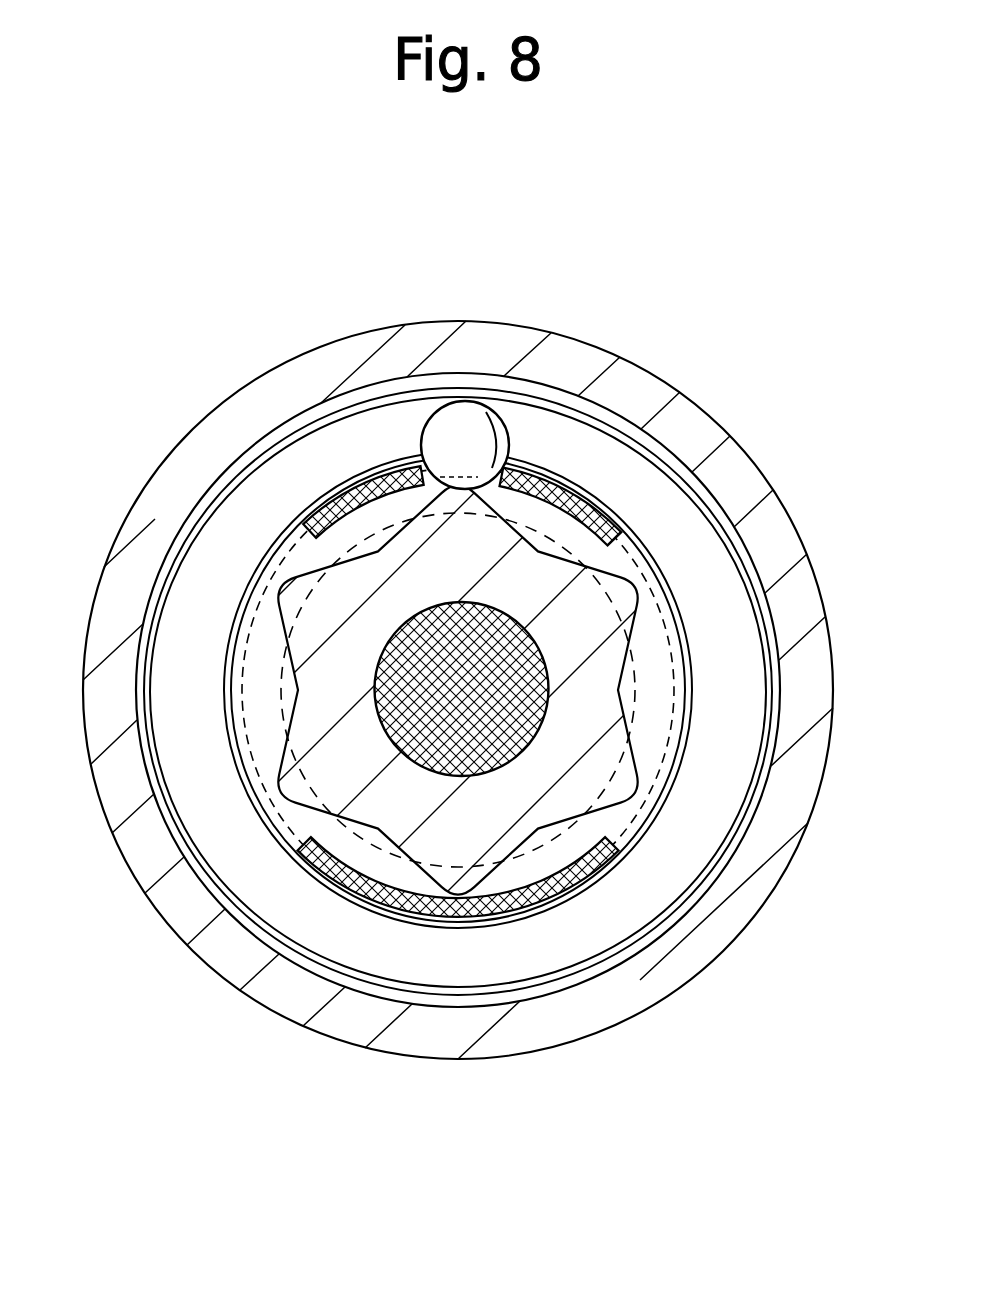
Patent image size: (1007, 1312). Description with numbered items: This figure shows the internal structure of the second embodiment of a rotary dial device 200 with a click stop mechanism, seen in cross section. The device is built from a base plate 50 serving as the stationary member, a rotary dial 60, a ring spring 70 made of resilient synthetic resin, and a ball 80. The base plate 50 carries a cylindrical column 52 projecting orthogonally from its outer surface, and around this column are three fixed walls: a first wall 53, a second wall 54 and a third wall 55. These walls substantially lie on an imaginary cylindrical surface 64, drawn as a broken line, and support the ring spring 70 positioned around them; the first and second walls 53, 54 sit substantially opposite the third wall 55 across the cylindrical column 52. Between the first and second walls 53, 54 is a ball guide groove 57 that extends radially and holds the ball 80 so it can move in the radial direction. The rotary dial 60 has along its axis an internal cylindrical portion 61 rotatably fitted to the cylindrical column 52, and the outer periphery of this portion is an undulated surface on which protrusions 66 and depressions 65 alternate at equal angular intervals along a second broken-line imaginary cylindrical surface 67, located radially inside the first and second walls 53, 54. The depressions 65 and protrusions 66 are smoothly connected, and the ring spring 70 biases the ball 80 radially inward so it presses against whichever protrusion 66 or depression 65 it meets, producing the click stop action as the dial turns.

The rotary dial device 200 is at (256, 288).
The base plate 50 is at (417, 714).
The cylindrical column 52 is at (222, 903).
The first wall 53 is at (345, 480).
The second wall 54 is at (568, 485).
The third wall 55 is at (430, 918).
The ball guide groove 57 is at (491, 410).
The rotary dial 60 is at (742, 470).
The internal cylindrical portion 61 is at (535, 772).
The imaginary cylindrical surface 64 is at (680, 653).
The depressions 65 is at (622, 690).
The protrusions 66 is at (665, 823).
The imaginary cylindrical surface 67 is at (256, 777).
The ring spring 70 is at (640, 800).
The ball 80 is at (447, 425).